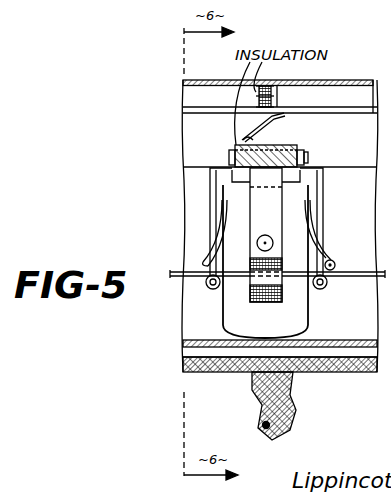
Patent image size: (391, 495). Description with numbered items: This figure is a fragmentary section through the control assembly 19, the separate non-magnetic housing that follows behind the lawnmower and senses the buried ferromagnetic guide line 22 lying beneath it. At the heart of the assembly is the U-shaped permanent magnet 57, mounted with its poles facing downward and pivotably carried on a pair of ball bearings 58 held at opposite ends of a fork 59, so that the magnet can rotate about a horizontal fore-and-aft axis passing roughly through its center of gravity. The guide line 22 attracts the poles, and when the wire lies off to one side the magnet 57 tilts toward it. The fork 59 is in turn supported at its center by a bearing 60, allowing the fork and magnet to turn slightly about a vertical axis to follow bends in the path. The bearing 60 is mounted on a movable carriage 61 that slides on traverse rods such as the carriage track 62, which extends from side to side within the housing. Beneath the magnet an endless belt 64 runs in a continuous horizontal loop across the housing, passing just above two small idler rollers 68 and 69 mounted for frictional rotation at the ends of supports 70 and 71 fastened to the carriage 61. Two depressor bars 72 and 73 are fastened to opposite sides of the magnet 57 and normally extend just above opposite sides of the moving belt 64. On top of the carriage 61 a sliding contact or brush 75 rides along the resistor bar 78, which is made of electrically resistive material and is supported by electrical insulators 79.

The control assembly 19 is at (330, 80).
The ferromagnetic guide line 22 is at (260, 431).
The U-shaped permanent magnet 57 is at (308, 322).
The ball bearings 58 is at (272, 239).
The fork 59 is at (278, 200).
The bearing 60 is at (297, 150).
The movable carriage 61 is at (308, 158).
The carriage track or traverse rod 62 is at (352, 160).
The endless belt 64 is at (172, 271).
The idler roller 68 is at (327, 287).
The idler roller 69 is at (208, 289).
The support 70 is at (323, 206).
The support 71 is at (210, 208).
The depressor bar 72 is at (331, 257).
The depressor bar 73 is at (205, 250).
The sliding electrical contact or brush 75 is at (271, 122).
The resistor bar 78 is at (316, 96).
The electrical insulator 79 is at (272, 101).